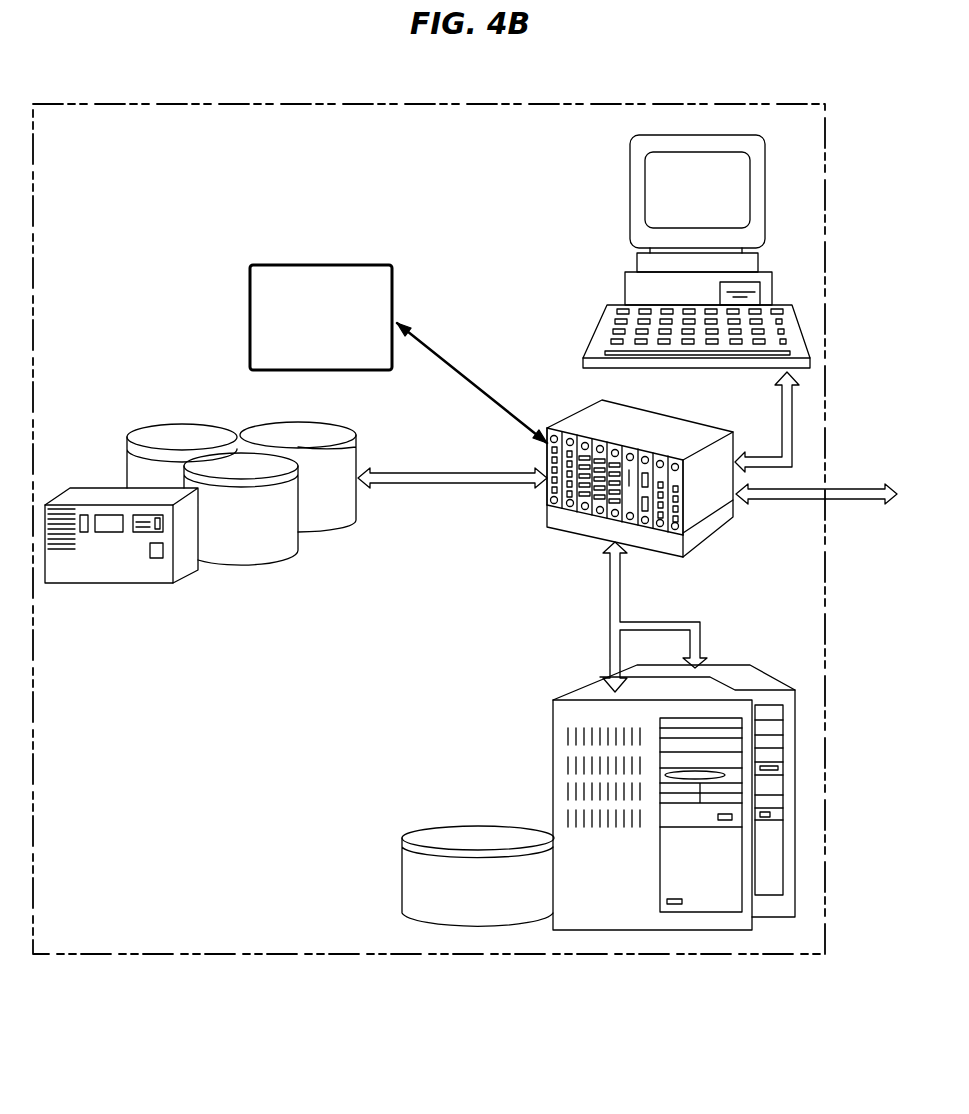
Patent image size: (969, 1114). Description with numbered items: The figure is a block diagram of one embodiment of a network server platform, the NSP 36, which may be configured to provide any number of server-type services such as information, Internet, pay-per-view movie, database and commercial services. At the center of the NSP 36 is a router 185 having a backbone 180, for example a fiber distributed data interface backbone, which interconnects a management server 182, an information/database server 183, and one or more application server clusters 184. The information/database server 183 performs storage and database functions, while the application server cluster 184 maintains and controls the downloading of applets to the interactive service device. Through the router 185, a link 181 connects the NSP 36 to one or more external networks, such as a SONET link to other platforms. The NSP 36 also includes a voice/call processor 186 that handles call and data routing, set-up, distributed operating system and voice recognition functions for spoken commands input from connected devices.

The NSP 36 is at (97, 74).
The backbone 180 is at (396, 470).
The link 181 is at (836, 488).
The management server 182 is at (630, 212).
The information/database server 183 is at (110, 583).
The application server cluster 184 is at (560, 930).
The router 185 is at (720, 530).
The voice/call processor 186 is at (392, 285).